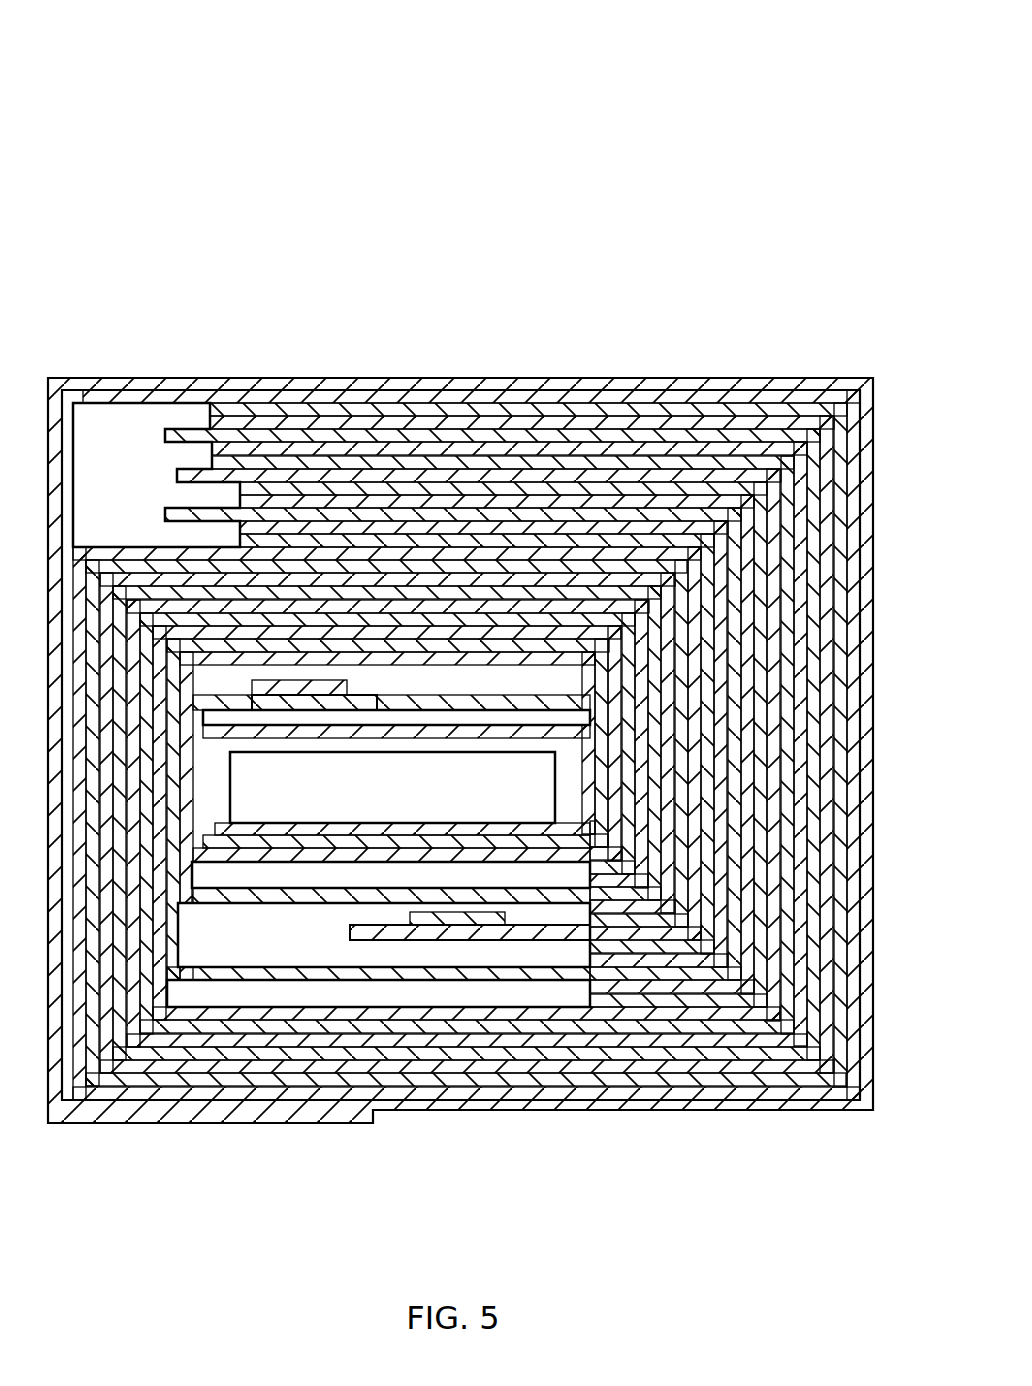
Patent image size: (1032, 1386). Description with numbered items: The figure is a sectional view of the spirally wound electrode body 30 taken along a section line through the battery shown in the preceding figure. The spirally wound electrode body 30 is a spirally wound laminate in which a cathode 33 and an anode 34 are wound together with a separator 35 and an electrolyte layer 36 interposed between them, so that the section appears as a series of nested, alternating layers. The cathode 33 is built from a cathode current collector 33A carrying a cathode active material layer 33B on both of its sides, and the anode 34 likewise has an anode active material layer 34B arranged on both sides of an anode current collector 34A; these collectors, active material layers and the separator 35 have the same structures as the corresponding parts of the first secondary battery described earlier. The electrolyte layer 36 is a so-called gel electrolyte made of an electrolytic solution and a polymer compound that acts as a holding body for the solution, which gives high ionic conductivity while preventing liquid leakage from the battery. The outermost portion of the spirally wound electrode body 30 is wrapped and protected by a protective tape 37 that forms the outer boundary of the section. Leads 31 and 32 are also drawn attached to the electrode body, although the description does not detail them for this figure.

The spirally wound electrode body 30 is at (678, 138).
The cathode lead 31 is at (265, 690).
The anode lead 32 is at (452, 918).
The cathode 33 is at (282, 248).
The cathode current collector 33A is at (205, 465).
The cathode active material layer 33B is at (280, 492).
The anode 34 is at (557, 248).
The anode current collector 34A is at (400, 400).
The anode active material layer 34B is at (530, 535).
The separator 35 is at (598, 540).
The electrolyte layer 36 is at (712, 520).
The protective tape 37 is at (822, 388).